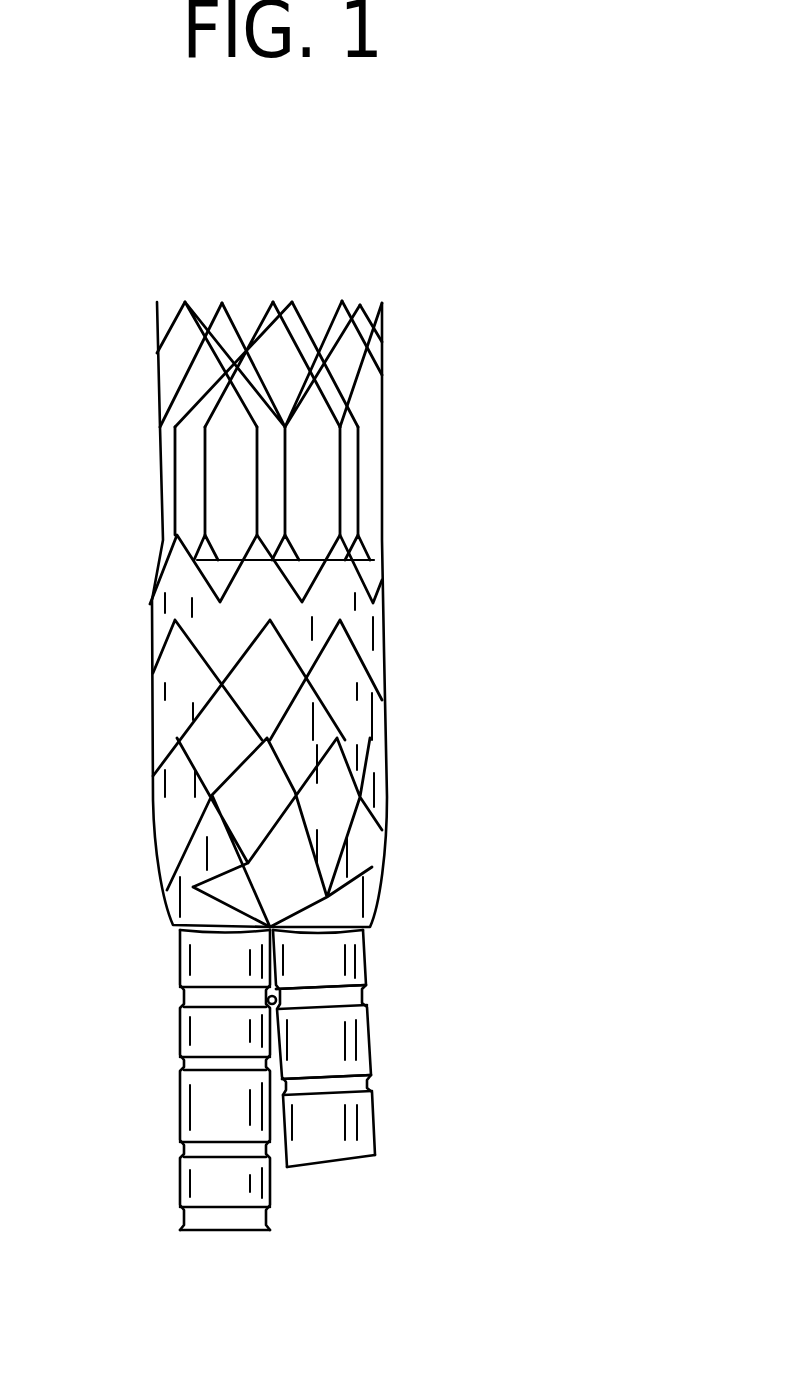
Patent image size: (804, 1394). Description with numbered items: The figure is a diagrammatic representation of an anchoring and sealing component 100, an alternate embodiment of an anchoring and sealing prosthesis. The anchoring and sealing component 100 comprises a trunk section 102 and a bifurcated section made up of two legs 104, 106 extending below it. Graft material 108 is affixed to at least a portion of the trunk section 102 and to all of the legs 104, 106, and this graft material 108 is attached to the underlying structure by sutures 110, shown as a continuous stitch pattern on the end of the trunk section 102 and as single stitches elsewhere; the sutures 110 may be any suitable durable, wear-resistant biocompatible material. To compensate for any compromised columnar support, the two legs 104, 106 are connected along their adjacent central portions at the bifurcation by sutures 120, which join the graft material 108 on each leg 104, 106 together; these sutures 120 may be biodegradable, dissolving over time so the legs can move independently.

The anchoring and sealing component 100 is at (675, 391).
The trunk section 102 is at (442, 327).
The leg 104 is at (180, 1104).
The leg 106 is at (368, 1050).
The graft material 108 is at (160, 867).
The sutures 110 is at (154, 622).
The sutures 120 is at (277, 1120).